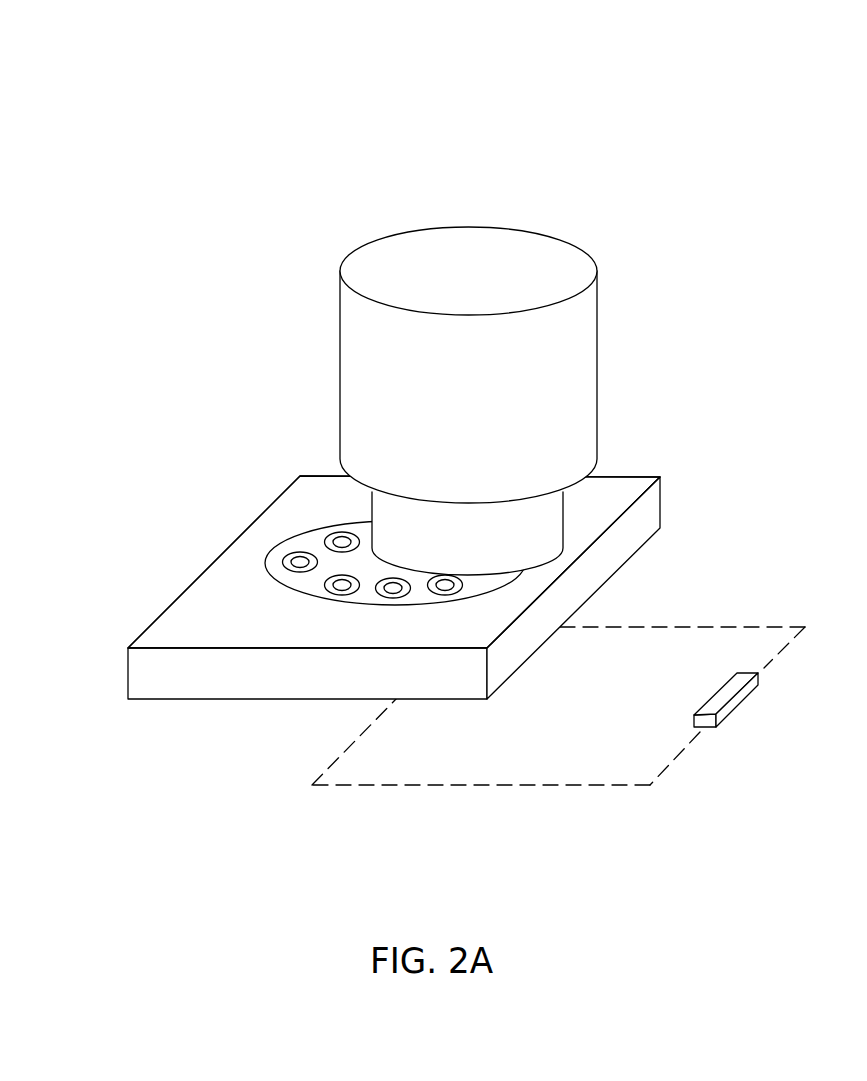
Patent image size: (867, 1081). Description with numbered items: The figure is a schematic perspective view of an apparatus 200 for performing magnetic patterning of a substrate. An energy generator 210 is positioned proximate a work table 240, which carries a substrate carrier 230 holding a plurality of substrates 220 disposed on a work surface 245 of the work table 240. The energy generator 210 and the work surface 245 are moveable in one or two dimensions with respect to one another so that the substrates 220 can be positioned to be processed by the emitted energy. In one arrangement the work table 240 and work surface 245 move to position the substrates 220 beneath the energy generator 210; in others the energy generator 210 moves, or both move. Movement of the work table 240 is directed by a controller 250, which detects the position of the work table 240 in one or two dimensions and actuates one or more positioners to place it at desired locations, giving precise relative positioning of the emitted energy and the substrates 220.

The apparatus 200 is at (652, 65).
The energy generator 210 is at (598, 338).
The substrates 220 is at (283, 568).
The substrate carrier 230 is at (288, 537).
The work table 240 is at (662, 503).
The work surface 245 is at (198, 628).
The controller 250 is at (737, 707).